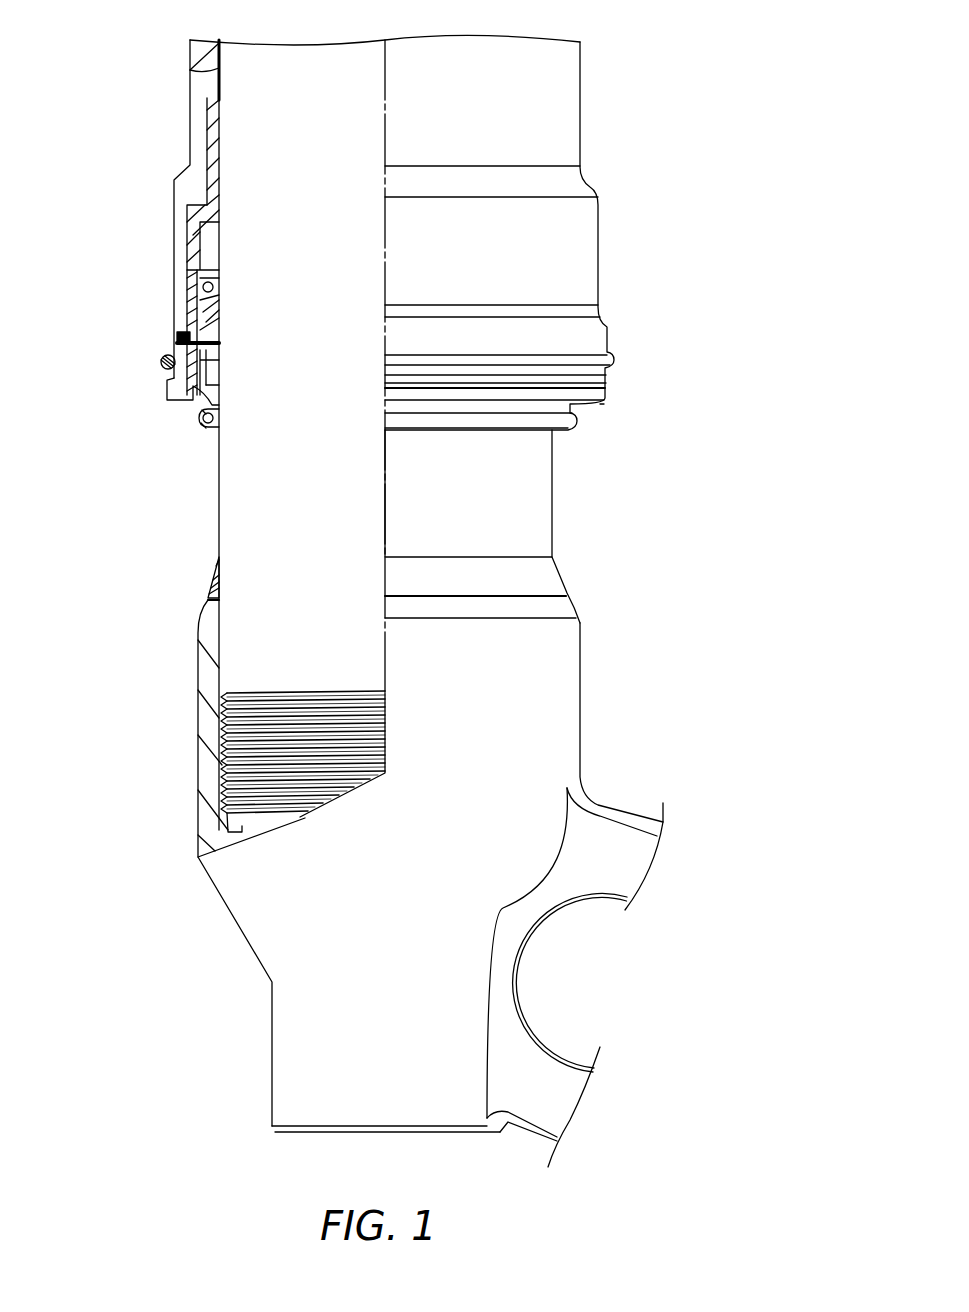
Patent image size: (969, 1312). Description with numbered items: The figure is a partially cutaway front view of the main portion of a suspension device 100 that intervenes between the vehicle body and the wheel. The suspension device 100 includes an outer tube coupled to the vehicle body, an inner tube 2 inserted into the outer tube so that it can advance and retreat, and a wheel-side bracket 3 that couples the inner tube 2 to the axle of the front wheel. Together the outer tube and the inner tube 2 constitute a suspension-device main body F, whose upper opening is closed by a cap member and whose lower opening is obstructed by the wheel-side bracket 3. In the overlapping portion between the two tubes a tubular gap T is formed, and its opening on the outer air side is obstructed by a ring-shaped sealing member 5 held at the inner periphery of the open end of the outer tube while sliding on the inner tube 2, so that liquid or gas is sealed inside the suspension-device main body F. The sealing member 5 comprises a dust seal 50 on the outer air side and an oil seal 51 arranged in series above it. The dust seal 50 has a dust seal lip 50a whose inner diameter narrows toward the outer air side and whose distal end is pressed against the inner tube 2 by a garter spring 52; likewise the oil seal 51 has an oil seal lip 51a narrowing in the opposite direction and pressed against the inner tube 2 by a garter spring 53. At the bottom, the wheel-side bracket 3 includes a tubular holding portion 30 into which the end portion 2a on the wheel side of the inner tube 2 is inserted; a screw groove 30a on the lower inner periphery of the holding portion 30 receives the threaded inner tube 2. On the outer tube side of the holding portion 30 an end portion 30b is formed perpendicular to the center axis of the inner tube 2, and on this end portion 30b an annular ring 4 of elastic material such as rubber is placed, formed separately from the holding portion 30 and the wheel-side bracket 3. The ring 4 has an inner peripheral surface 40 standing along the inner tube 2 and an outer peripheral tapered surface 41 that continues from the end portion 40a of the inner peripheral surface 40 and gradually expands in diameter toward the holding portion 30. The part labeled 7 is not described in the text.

The suspension device 100 is at (633, 84).
The nozzle nut 7 is at (583, 268).
The inner tube 2 is at (527, 511).
The end portion on the wheel side of the inner tube 2a is at (270, 818).
The wheel-side bracket 3 is at (548, 726).
The ring 4 is at (555, 584).
The sealing member 5 is at (92, 288).
The holding portion 30 is at (207, 707).
The screw groove 30a is at (226, 798).
The end portion of the holding portion 30b is at (222, 592).
The inner peripheral surface 40 is at (222, 570).
The end portion of the inner peripheral surface 40a is at (220, 557).
The outer peripheral tapered surface 41 is at (211, 588).
The dust seal 50 is at (192, 372).
The dust seal lip 50a is at (222, 404).
The oil seal 51 is at (193, 292).
The oil seal lip 51a is at (214, 292).
The garter spring 52 is at (204, 424).
The garter spring 53 is at (193, 272).
The tubular gap T is at (190, 70).
The suspension-device main body F is at (608, 422).